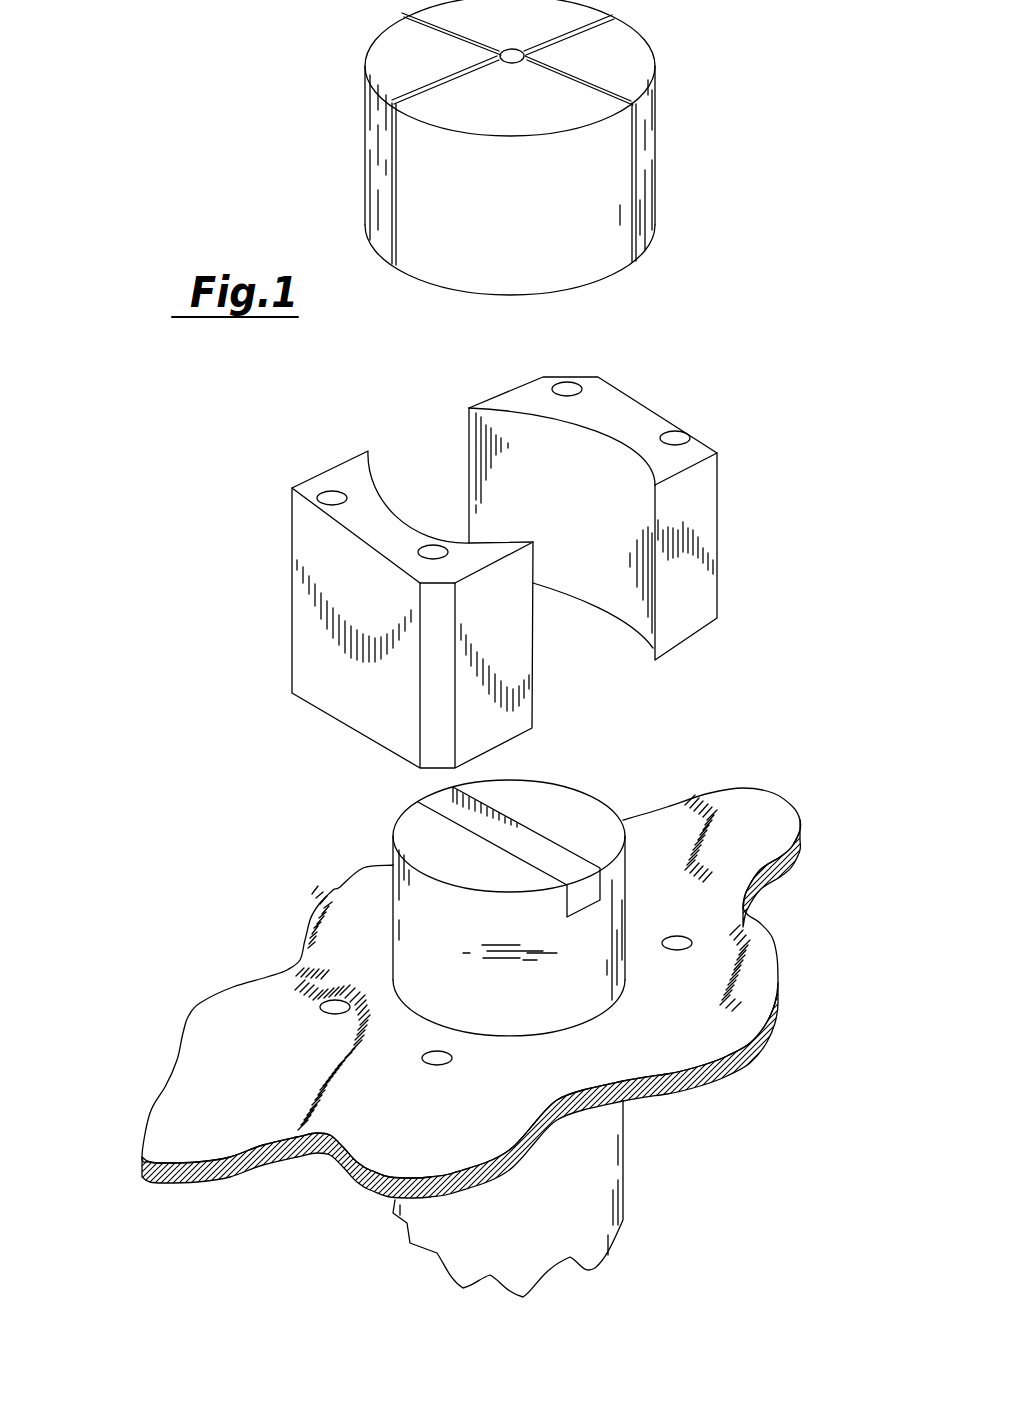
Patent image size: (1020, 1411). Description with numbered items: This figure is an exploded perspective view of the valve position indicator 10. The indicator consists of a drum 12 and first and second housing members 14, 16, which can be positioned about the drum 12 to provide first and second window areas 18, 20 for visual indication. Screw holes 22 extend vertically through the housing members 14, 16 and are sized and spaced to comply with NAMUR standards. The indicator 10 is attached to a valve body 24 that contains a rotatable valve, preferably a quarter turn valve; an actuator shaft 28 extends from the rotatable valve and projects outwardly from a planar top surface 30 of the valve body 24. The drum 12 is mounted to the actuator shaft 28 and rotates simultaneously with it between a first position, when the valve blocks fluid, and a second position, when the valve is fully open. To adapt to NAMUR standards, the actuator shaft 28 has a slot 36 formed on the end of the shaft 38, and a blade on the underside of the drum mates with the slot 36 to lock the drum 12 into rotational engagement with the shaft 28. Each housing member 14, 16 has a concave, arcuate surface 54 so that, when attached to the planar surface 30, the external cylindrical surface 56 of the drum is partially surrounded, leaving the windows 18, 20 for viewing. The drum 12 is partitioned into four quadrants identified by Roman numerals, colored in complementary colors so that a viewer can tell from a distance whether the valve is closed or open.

The valve position indicator 10 is at (312, 757).
The drum 12 is at (487, 265).
The first housing member 14 is at (635, 402).
The second housing member 16 is at (333, 492).
The first window area 18 is at (556, 658).
The second window area 20 is at (427, 493).
The screw holes 22 is at (567, 388).
The valve body 24 is at (240, 1063).
The actuator shaft 28 is at (495, 1038).
The planar top surface 30 is at (222, 1127).
The slot 36 is at (440, 806).
The end of the shaft 38 is at (553, 802).
The concave arcuate surface 54 is at (552, 562).
The external cylindrical surface of the drum 56 is at (650, 89).